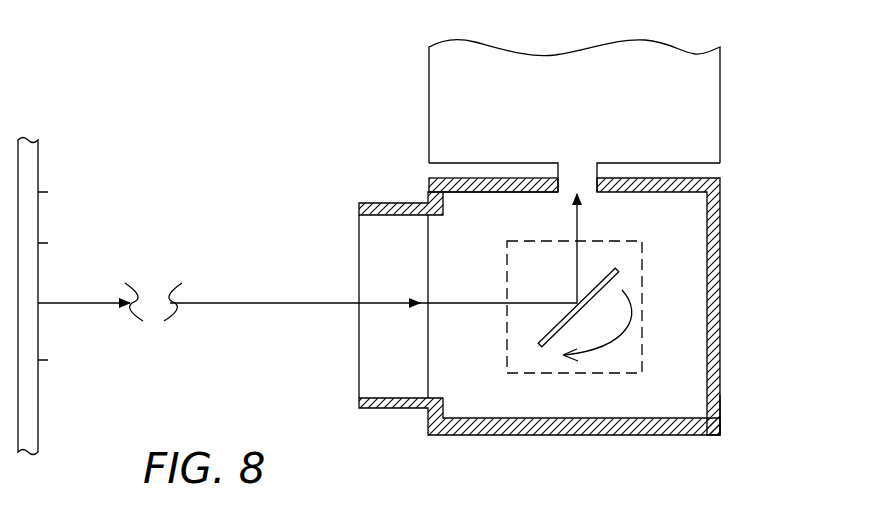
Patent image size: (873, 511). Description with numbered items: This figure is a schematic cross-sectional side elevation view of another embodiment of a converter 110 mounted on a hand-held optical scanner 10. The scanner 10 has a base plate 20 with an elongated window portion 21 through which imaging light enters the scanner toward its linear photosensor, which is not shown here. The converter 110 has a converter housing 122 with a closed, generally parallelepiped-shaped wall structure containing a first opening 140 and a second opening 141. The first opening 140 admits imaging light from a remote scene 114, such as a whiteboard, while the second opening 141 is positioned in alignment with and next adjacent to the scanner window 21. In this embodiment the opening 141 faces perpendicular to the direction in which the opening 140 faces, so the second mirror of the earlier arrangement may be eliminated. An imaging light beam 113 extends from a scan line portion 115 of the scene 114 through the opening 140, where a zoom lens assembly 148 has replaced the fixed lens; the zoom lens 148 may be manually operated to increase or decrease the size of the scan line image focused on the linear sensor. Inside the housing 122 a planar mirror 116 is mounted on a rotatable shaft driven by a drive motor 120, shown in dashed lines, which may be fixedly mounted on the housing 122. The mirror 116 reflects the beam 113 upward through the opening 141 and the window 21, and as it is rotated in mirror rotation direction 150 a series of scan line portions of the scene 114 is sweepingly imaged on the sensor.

The scanner 10 is at (722, 120).
The base plate 20 is at (708, 175).
The window portion 21 is at (578, 178).
The converter 110 is at (722, 277).
The imaging light beam 113 is at (265, 303).
The scene 114 is at (38, 192).
The scan line portion 115 is at (38, 302).
The planar mirror 116 is at (543, 350).
The drive motor 120 is at (642, 332).
The converter housing 122 is at (720, 405).
The first opening 140 is at (359, 270).
The second opening 141 is at (565, 193).
The zoom lens assembly 148 is at (375, 340).
The mirror rotation direction 150 is at (597, 352).